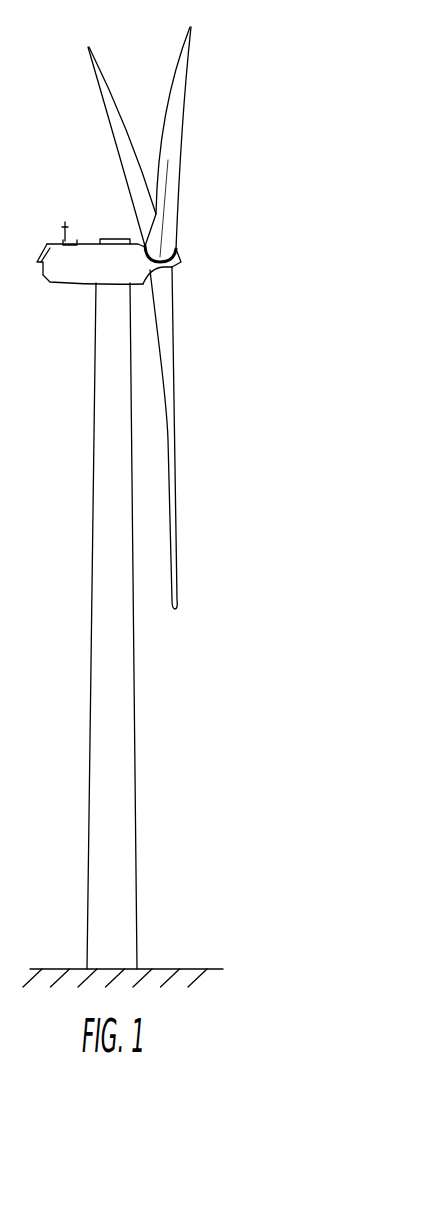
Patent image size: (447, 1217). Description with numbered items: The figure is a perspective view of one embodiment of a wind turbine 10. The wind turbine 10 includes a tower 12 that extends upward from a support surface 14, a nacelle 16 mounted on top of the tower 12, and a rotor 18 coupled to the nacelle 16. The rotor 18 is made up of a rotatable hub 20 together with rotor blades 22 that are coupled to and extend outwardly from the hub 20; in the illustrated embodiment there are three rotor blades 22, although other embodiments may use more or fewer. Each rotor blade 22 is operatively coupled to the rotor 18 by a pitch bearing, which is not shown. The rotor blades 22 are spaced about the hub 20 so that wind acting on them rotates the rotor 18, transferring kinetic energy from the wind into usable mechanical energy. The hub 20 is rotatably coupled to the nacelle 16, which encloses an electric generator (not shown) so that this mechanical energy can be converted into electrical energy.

The wind turbine 10 is at (283, 175).
The tower 12 is at (113, 732).
The support surface 14 is at (62, 968).
The nacelle 16 is at (70, 282).
The rotor 18 is at (183, 255).
The rotatable hub 20 is at (181, 262).
The rotor blade 22 is at (108, 92).